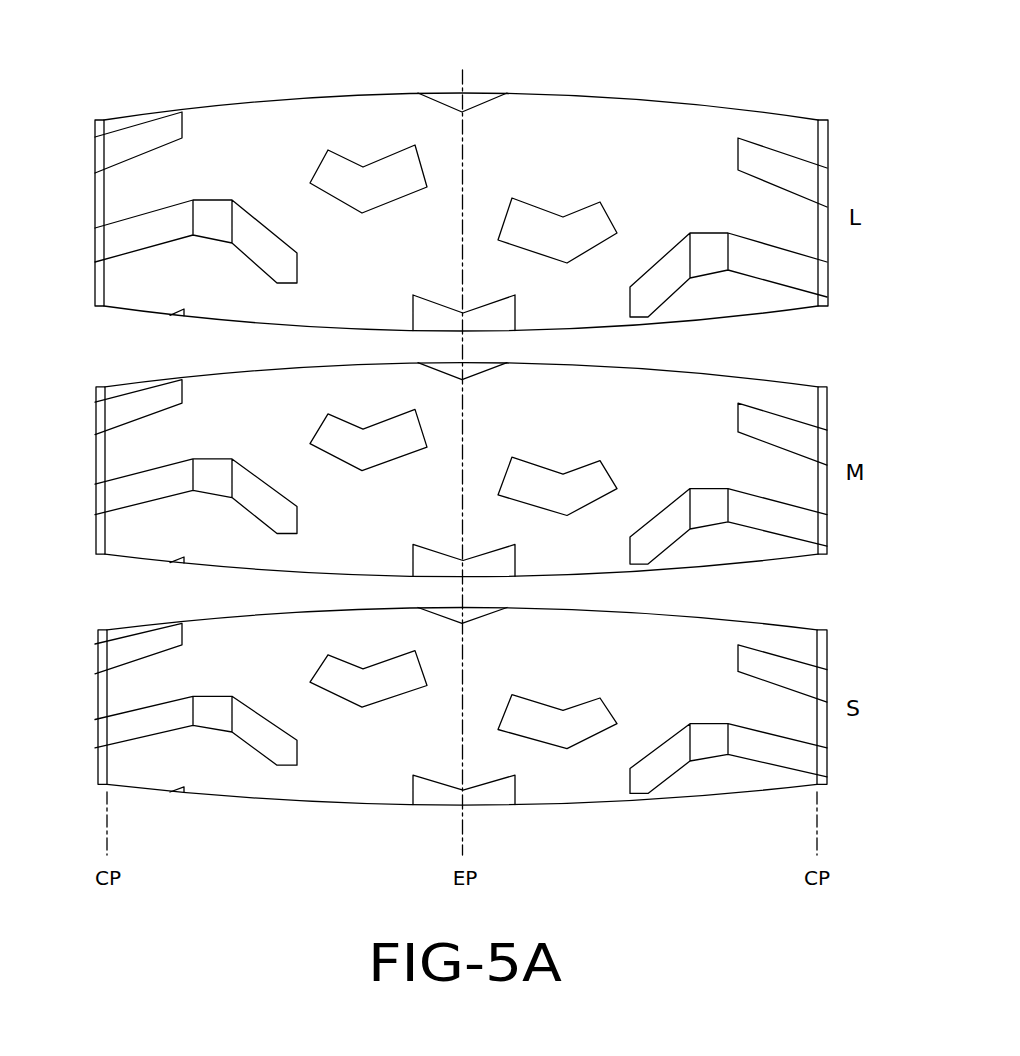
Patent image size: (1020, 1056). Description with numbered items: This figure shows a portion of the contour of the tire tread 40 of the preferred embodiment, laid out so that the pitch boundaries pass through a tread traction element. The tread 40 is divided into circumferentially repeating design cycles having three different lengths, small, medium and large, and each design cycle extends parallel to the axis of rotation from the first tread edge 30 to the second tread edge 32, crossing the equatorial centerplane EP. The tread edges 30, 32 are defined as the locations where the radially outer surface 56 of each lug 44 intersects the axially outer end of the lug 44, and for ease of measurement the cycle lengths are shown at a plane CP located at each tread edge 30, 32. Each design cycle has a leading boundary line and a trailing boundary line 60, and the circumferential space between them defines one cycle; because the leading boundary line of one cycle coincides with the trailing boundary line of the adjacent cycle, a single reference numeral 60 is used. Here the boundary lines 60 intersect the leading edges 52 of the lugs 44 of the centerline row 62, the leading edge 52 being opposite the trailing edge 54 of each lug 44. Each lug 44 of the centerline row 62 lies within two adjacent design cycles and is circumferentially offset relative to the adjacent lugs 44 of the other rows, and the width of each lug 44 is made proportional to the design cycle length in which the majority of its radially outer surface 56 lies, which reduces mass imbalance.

The first tread edge 30 is at (95, 280).
The second tread edge 32 is at (828, 280).
The tread 40 is at (840, 150).
The lug 44 is at (155, 127).
The leading edge 52 is at (483, 373).
The trailing edge 54 is at (483, 305).
The radially outer surface 56 is at (430, 324).
The pitch boundary line 60 is at (713, 572).
The centerline row 62 is at (435, 807).